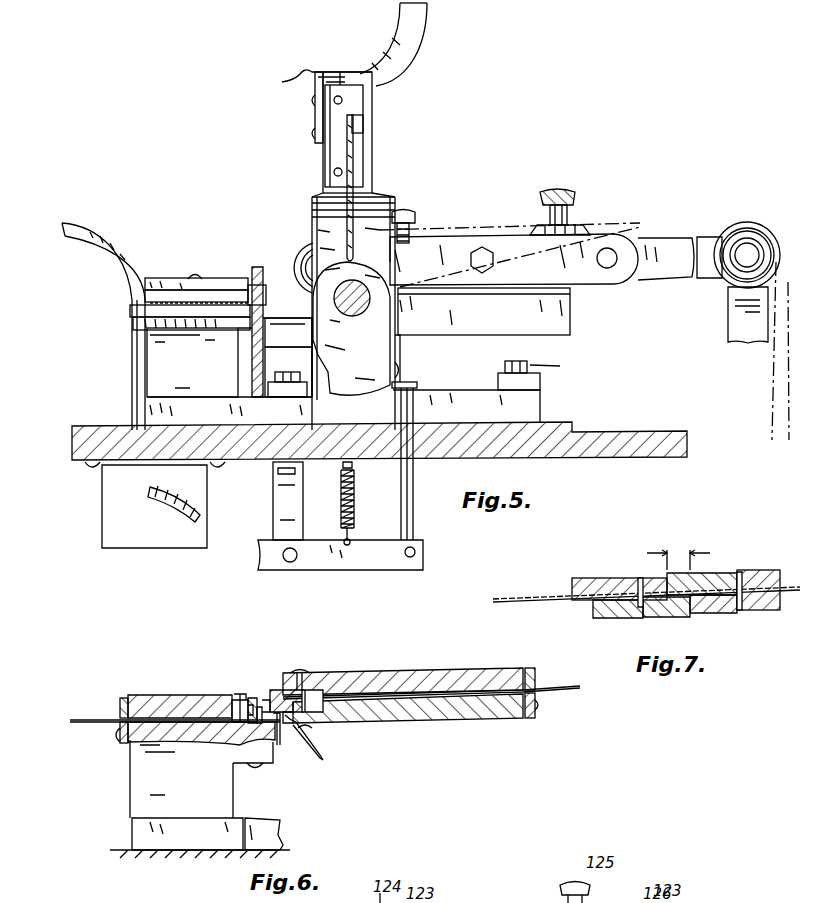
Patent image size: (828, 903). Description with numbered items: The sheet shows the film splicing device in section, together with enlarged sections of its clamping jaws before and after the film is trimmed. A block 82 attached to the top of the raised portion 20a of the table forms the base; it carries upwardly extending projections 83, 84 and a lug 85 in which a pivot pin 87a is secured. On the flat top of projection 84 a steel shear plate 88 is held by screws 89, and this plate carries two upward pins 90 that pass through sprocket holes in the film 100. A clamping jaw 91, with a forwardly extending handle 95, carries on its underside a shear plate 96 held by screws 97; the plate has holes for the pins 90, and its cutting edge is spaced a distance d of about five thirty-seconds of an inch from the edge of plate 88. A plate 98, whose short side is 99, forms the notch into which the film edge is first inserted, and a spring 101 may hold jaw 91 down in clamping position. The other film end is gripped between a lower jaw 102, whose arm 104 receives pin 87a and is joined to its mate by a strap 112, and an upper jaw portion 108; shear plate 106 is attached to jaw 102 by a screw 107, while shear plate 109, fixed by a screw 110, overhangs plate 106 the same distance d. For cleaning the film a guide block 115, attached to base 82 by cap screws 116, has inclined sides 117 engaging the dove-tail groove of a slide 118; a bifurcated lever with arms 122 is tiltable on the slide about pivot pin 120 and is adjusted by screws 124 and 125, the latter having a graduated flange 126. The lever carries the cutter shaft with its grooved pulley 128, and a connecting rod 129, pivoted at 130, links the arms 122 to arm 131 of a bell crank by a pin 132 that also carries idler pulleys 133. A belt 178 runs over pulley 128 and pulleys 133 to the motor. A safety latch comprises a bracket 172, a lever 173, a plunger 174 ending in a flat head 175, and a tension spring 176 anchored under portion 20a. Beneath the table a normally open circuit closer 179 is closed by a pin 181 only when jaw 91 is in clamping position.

In FIG. 5, the raised portion 20a is at (565, 427).
In FIG. 5, the block 82 is at (343, 406).
In FIG. 6, the block 82 is at (200, 838).
In FIG. 5, the projection 83 is at (192, 362).
In FIG. 5, the projection 84 is at (150, 323).
In FIG. 6, the projection 84 is at (201, 779).
In FIG. 5, the lug 85 is at (318, 372).
In FIG. 5, the pivot pin 87a is at (345, 313).
In FIG. 5, the shear plate 88 is at (130, 309).
In FIG. 7, the shear plate 88 is at (614, 618).
In FIG. 6, the shear plate 88 is at (279, 735).
In FIG. 6, the screws 89 is at (258, 768).
In FIG. 7, the pins 90 is at (643, 607).
In FIG. 6, the pins 90 is at (218, 740).
In FIG. 5, the clamping jaw 91 is at (220, 290).
In FIG. 6, the clamping jaw 91 is at (150, 695).
In FIG. 5, the handle 95 is at (118, 228).
In FIG. 5, the shear plate 96 is at (170, 278).
In FIG. 7, the shear plate 96 is at (600, 578).
In FIG. 6, the shear plate 96 is at (248, 703).
In FIG. 5, the screws 97 is at (195, 276).
In FIG. 6, the screws 97 is at (240, 694).
In FIG. 5, the plate 98 is at (317, 118).
In FIG. 6, the plate 98 is at (120, 740).
In FIG. 5, the short side 99 is at (363, 124).
In FIG. 6, the short side 99 is at (120, 703).
In FIG. 5, the film 100 is at (354, 150).
In FIG. 7, the film 100 is at (646, 589).
In FIG. 6, the film 100 is at (80, 720).
In FIG. 5, the spring 101 is at (282, 82).
In FIG. 5, the lower jaw 102 is at (324, 163).
In FIG. 6, the lower jaw 102 is at (456, 722).
In FIG. 5, the arm 104 is at (351, 328).
In FIG. 6, the shear plate 106 is at (335, 712).
In FIG. 6, the screw 107 is at (312, 740).
In FIG. 5, the jaw portion 108 is at (366, 162).
In FIG. 6, the jaw portion 108 is at (436, 690).
In FIG. 7, the shear plate 109 is at (760, 570).
In FIG. 6, the shear plate 109 is at (270, 690).
In FIG. 6, the screw 110 is at (305, 671).
In FIG. 5, the strap 112 is at (402, 364).
In FIG. 5, the guide block 115 is at (553, 359).
In FIG. 5, the cap screws 116 is at (287, 384).
In FIG. 5, the inclined sides 117 is at (288, 332).
In FIG. 5, the slide 118 is at (484, 311).
In FIG. 5, the pivot pin 120 is at (493, 256).
In FIG. 5, the arms 122 is at (448, 240).
In FIG. 5, the screw 124 is at (406, 212).
In FIG. 5, the screw 125 is at (560, 192).
In FIG. 5, the flange 126 is at (578, 224).
In FIG. 5, the grooved pulley 128 is at (305, 252).
In FIG. 5, the connecting rod 129 is at (663, 268).
In FIG. 5, the pivot pin 130 is at (604, 268).
In FIG. 5, the arm 131 is at (728, 326).
In FIG. 5, the pin 132 is at (750, 250).
In FIG. 5, the grooved pulleys 133 is at (730, 230).
In FIG. 5, the bracket 172 is at (273, 508).
In FIG. 5, the lever 173 is at (368, 562).
In FIG. 5, the plunger 174 is at (414, 476).
In FIG. 5, the flat head 175 is at (417, 383).
In FIG. 5, the tension spring 176 is at (355, 492).
In FIG. 5, the belt 178 is at (787, 416).
In FIG. 5, the circuit closer 179 is at (132, 548).
In FIG. 5, the pin 181 is at (132, 386).
In FIG. 7, the distance d is at (678, 555).